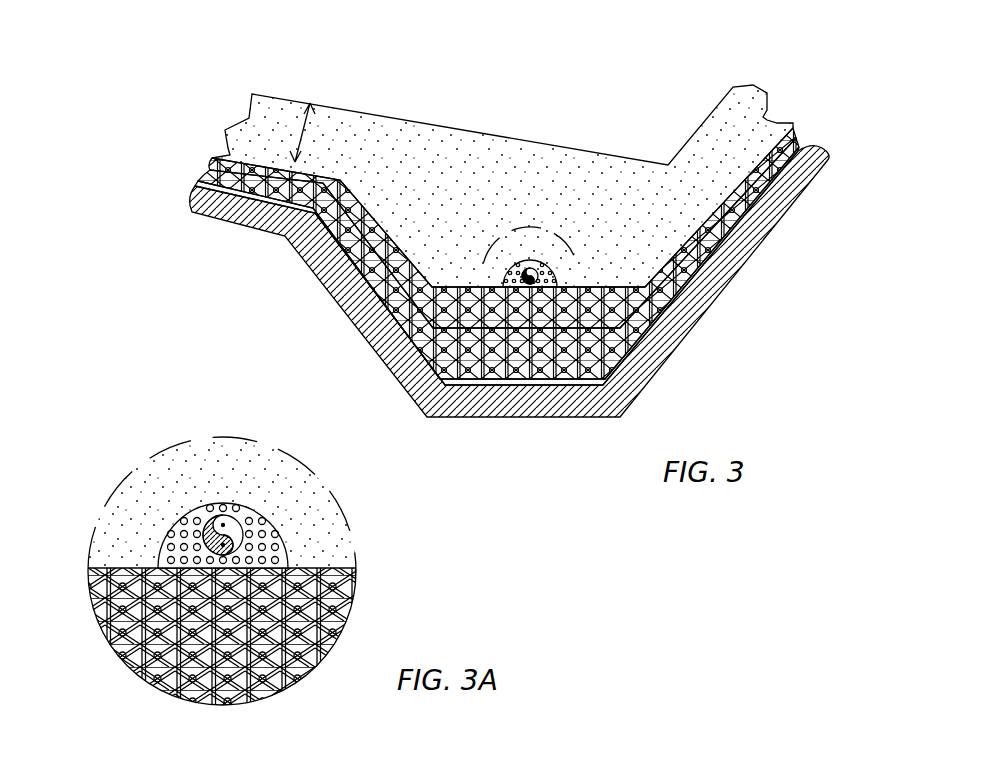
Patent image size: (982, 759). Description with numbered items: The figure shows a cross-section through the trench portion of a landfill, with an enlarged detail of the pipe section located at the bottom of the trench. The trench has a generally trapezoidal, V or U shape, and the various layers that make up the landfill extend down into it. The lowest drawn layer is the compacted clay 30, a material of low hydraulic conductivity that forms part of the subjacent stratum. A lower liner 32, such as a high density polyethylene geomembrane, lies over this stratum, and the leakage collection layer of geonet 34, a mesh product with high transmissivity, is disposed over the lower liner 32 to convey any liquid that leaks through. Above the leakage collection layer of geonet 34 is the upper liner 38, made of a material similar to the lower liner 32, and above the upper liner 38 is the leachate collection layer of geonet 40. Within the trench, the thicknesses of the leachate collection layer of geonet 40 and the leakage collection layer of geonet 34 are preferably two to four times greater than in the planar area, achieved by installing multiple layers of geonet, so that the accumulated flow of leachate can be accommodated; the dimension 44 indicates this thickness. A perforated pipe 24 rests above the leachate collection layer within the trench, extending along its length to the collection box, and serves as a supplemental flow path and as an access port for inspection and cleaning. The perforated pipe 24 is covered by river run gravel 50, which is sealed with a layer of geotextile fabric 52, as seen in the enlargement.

In FIG. 3, the layer of compacted clay 30 is at (829, 142).
In FIG. 3, the lower liner 32 is at (192, 192).
In FIG. 3, the leakage collection layer of geonet 34 is at (196, 182).
In FIG. 3, the upper liner 38 is at (207, 168).
In FIG. 3, the leachate collection layer of geonet 40 is at (207, 157).
In FIG. 3, the absorbent layer thickness 44 is at (248, 122).
In FIG. 3A, the perforated pipe 24 is at (210, 521).
In FIG. 3A, the river run gravel 50 is at (172, 540).
In FIG. 3A, the geotextile fabric 52 is at (223, 505).